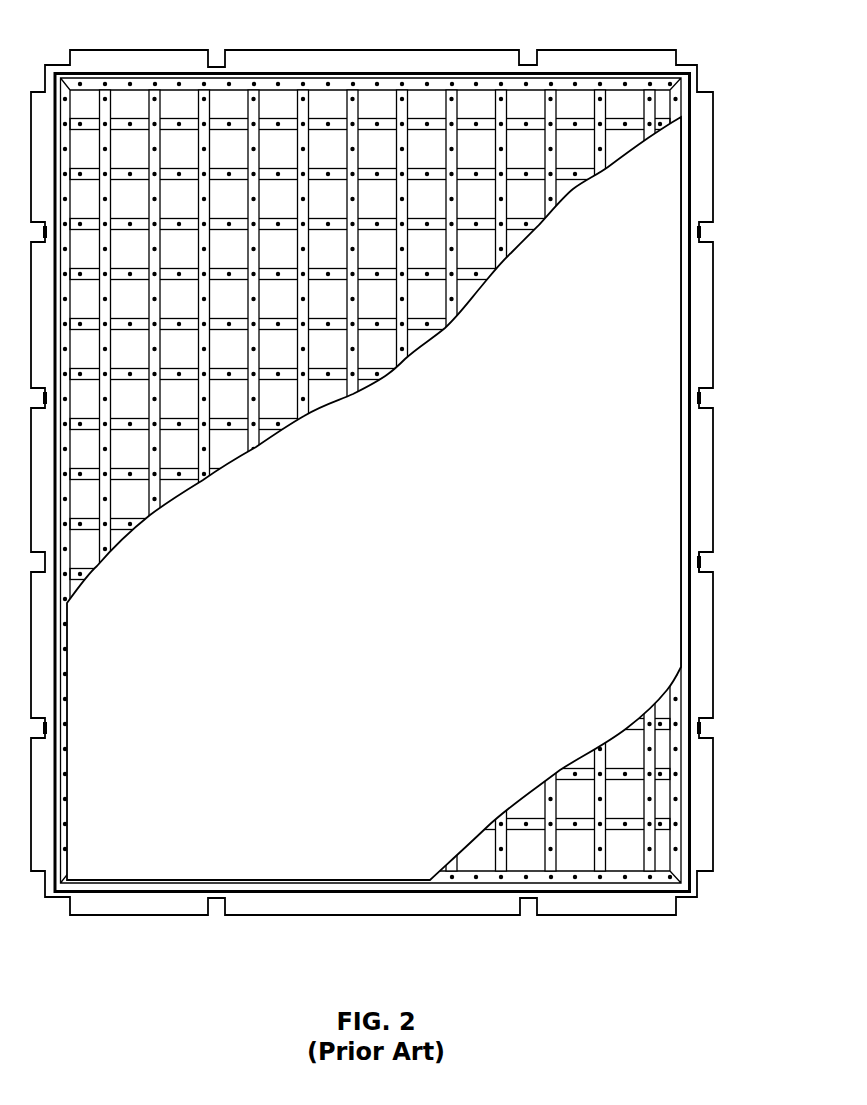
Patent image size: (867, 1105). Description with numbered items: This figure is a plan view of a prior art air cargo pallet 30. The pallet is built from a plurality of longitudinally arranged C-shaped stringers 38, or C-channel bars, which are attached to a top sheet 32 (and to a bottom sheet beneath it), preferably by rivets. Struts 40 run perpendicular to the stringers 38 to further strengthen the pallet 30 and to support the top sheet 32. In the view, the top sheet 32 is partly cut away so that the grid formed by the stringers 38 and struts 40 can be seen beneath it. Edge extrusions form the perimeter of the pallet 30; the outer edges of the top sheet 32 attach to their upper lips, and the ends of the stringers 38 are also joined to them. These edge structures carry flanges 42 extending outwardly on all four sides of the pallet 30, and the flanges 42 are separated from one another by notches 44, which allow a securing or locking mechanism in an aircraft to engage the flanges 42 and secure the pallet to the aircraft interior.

The air cargo pallet 30 is at (545, 44).
The top sheet 32 is at (152, 847).
The C-shaped stringers 38 is at (600, 862).
The struts 40 is at (532, 827).
The flanges 42 is at (705, 478).
The notches 44 is at (703, 562).